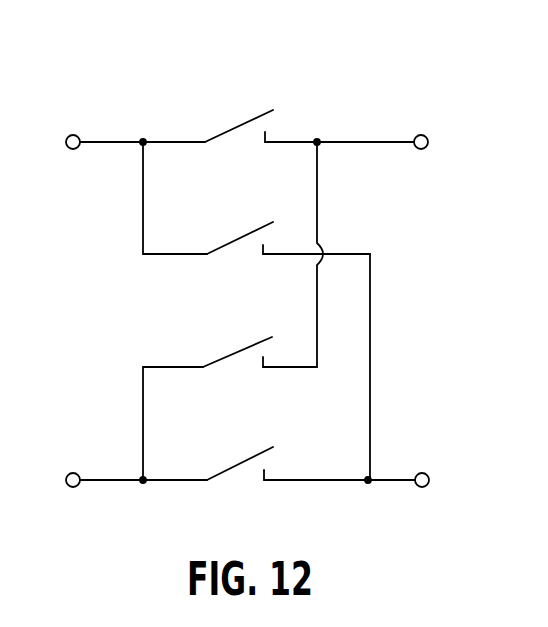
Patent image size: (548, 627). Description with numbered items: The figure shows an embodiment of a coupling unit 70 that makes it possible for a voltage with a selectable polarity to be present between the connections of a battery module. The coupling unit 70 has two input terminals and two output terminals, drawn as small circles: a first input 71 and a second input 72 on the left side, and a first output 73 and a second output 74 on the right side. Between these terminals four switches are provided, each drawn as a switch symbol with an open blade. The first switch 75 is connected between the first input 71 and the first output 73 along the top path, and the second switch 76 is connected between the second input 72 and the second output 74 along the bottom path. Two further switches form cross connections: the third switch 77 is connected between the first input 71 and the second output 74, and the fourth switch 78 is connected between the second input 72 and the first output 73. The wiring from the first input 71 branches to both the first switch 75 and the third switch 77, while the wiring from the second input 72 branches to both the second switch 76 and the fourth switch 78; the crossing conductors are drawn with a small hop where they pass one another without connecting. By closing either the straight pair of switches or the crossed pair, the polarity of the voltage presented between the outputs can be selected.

The coupling unit 70 is at (324, 97).
The first input 71 is at (70, 134).
The second input 72 is at (74, 472).
The first output 73 is at (421, 134).
The second output 74 is at (422, 472).
The first switch 75 is at (224, 131).
The second switch 76 is at (223, 470).
The third switch 77 is at (228, 243).
The fourth switch 78 is at (222, 357).